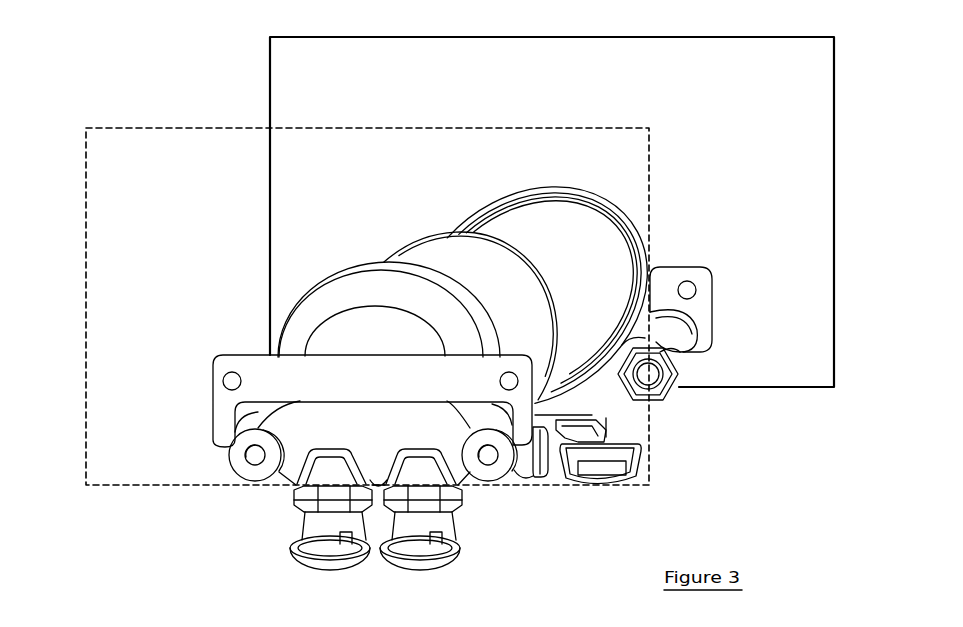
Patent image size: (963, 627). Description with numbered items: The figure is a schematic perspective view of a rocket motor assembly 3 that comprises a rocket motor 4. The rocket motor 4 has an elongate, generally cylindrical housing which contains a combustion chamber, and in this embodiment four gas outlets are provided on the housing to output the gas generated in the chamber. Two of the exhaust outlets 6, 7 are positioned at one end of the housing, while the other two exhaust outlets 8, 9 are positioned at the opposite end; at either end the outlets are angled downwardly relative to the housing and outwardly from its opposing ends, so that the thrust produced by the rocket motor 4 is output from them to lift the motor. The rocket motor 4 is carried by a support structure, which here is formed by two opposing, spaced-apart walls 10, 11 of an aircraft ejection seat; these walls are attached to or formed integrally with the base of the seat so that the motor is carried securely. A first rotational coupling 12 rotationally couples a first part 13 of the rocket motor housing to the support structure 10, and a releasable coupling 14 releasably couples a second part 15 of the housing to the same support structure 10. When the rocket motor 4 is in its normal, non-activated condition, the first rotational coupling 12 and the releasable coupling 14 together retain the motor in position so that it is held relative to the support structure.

The rocket motor assembly 3 is at (230, 58).
The rocket motor 4 is at (448, 253).
The gas outlet 6 is at (318, 563).
The gas outlet 7 is at (428, 568).
The gas outlet 8 is at (528, 472).
The gas outlet 9 is at (612, 482).
The wall 10 is at (85, 342).
The wall 11 is at (836, 115).
The first rotational coupling 12 is at (489, 462).
The first part 13 is at (542, 455).
The releasable coupling 14 is at (254, 460).
The second part 15 is at (232, 440).